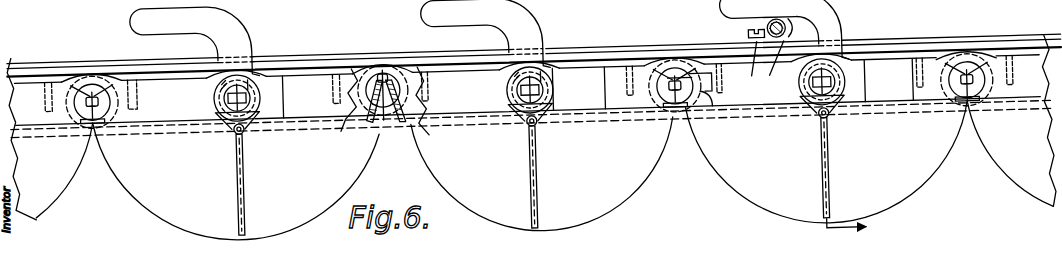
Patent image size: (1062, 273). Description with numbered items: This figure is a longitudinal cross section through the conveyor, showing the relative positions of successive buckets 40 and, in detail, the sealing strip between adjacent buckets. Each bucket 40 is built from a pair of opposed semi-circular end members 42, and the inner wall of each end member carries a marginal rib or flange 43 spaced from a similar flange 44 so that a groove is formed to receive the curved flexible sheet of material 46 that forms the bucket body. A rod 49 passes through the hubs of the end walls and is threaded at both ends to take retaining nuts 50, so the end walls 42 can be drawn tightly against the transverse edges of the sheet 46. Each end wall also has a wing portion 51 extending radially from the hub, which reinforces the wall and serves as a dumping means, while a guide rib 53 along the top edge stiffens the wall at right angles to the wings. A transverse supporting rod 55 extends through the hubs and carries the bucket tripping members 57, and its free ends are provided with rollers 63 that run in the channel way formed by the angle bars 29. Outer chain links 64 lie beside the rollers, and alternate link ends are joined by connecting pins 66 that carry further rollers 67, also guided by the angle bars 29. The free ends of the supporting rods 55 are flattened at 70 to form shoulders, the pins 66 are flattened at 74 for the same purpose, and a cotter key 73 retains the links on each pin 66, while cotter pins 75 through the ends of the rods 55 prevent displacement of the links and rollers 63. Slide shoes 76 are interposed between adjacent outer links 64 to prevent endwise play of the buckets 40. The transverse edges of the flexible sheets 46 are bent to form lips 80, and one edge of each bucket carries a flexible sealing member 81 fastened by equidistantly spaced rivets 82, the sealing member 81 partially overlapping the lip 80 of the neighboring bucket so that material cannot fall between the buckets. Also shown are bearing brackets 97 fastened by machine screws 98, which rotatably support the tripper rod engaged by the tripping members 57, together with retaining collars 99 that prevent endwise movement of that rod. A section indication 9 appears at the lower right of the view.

The section line 9 is at (856, 228).
The angle bars 29 is at (628, 63).
The bucket 40 is at (160, 221).
The end member 42 is at (180, 187).
The marginal rib or flange 43 is at (388, 142).
The flange 44 is at (410, 125).
The flexible sheet of material 46 is at (408, 135).
The rod 49 is at (245, 139).
The retaining nuts 50 is at (233, 137).
The wing portion 51 is at (244, 201).
The guide rib 53 is at (165, 78).
The supporting rod 55 is at (230, 100).
The bucket tripping member 57 is at (254, 55).
The rollers 63 is at (282, 70).
The outer chain links 64 is at (162, 117).
The connecting pins 66 is at (712, 108).
The rollers 67 is at (92, 77).
The flattened portion 70 is at (222, 88).
The cotter key 73 is at (692, 96).
The flattened portion 74 is at (704, 122).
The cotter keys or pins 75 is at (250, 97).
The slide shoes 76 is at (306, 122).
The lips 80 is at (368, 122).
The flexible sealing member 81 is at (386, 78).
The rivets 82 is at (404, 78).
The bearing brackets 97 is at (768, 45).
The machine screws 98 is at (750, 54).
The retaining collars 99 is at (778, 60).